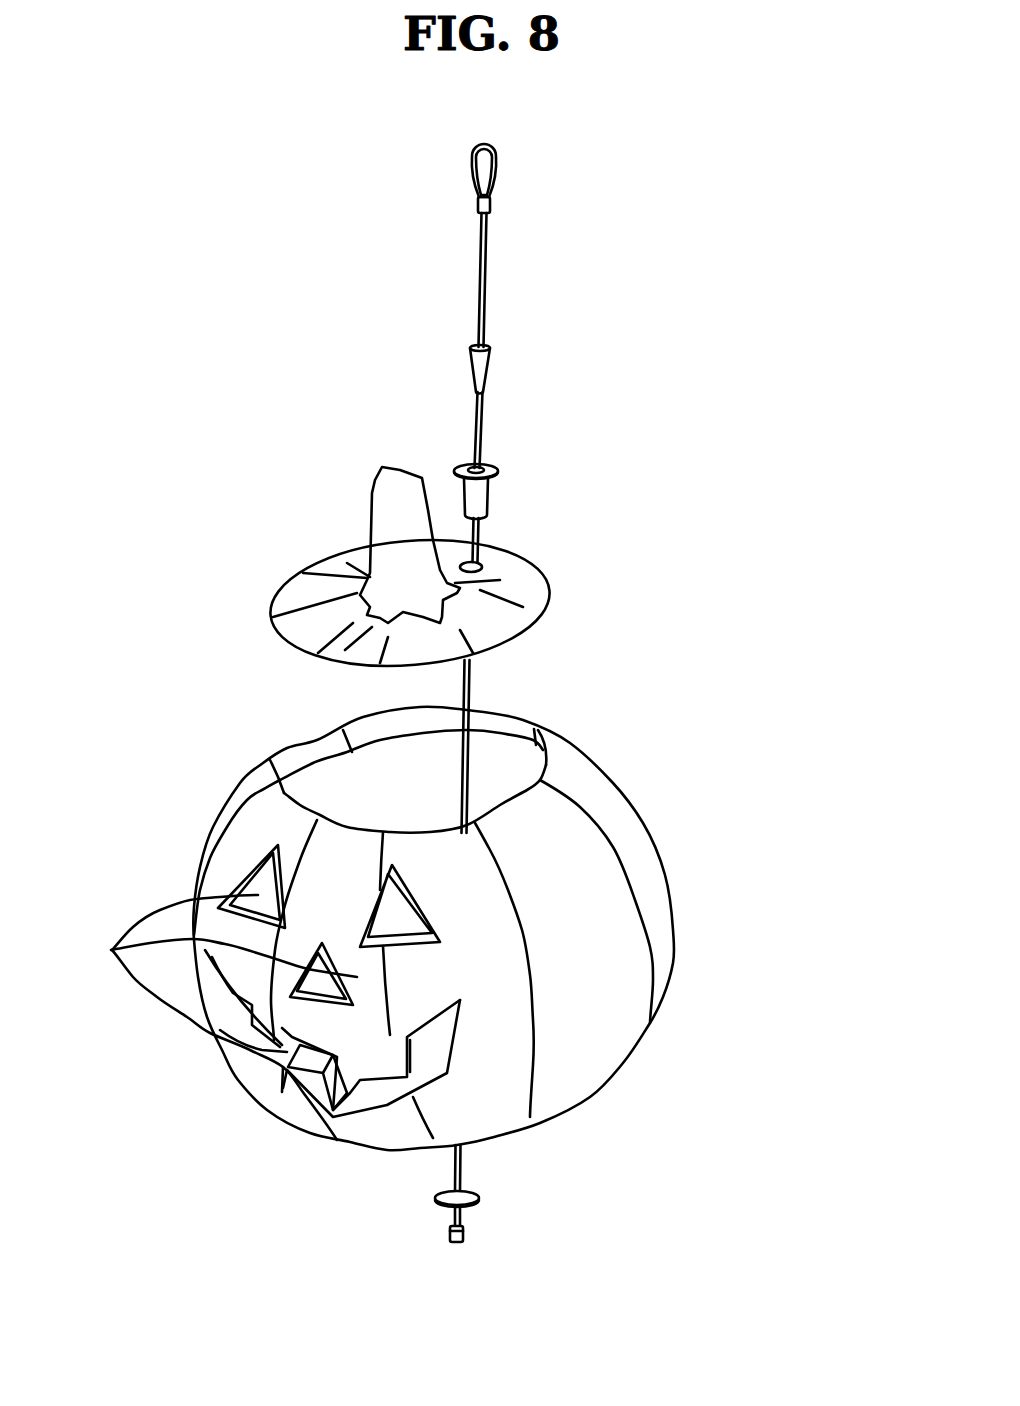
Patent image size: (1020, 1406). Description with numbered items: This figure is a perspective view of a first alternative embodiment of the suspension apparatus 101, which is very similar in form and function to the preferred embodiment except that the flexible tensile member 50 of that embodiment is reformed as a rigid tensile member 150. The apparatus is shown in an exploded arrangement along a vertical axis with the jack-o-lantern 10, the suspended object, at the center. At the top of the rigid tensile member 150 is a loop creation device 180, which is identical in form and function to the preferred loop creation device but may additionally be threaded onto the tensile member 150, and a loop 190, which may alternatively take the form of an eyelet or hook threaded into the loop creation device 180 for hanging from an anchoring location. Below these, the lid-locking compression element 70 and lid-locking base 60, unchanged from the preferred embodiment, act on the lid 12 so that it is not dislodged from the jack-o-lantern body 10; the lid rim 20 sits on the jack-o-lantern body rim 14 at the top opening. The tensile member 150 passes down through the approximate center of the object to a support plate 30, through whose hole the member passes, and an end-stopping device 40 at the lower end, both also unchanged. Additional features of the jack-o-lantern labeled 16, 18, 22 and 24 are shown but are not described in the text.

The suspension apparatus 101 is at (640, 272).
The jack-o-lantern 10 is at (583, 923).
The lid 12 is at (525, 586).
The jack-o-lantern body rim 14 is at (500, 808).
The face cutouts 16 is at (112, 950).
The top opening 18 is at (363, 785).
The lid rim 20 is at (295, 642).
The stem 22 is at (400, 532).
The lid hole 24 is at (482, 562).
The support plate 30 is at (487, 1187).
The end-stopping device 40 is at (463, 1237).
The tensile member 50 is at (443, 1170).
The lid-locking base 60 is at (478, 500).
The lid-locking compression element 70 is at (468, 366).
The rigid tensile member 150 is at (484, 290).
The loop creation device 180 is at (478, 206).
The loop 190 is at (500, 158).